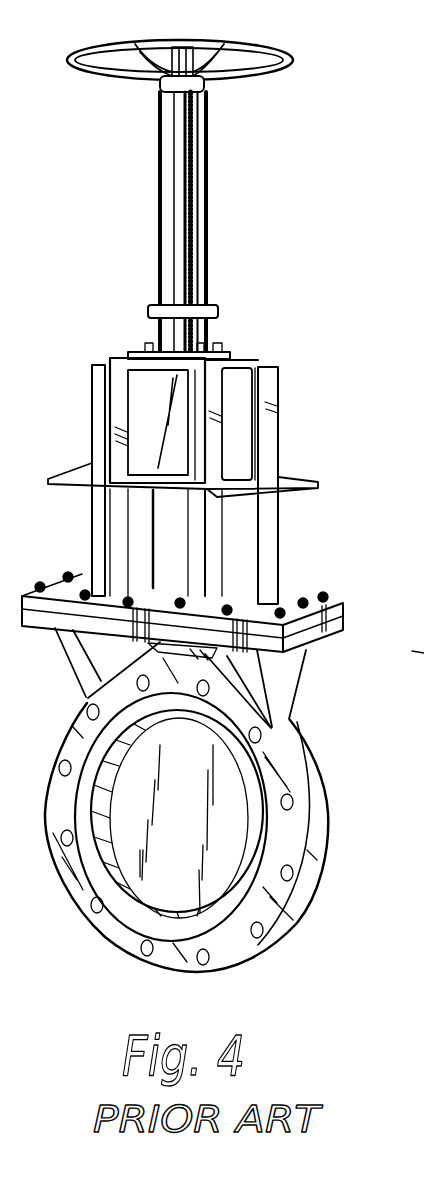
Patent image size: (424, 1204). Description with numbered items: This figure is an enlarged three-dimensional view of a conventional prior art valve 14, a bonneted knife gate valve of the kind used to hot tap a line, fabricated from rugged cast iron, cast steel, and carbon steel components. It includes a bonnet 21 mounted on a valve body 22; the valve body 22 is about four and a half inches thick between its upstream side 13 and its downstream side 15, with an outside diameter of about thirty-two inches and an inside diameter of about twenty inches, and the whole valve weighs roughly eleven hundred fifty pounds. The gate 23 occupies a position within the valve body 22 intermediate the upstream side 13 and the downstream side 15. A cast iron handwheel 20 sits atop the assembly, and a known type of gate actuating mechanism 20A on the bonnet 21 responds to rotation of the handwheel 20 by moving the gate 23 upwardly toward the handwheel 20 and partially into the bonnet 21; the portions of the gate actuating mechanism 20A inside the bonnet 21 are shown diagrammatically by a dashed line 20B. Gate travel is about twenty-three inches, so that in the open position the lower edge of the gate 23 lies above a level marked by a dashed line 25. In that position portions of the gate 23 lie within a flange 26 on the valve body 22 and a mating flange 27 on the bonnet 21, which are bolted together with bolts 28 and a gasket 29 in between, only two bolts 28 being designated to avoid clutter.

The prior art valve 14 is at (316, 182).
The handwheel 20 is at (280, 50).
The gate actuating mechanism 20A is at (200, 211).
The dashed line 20B is at (228, 422).
The bonnet 21 is at (277, 442).
The mating flange 27 is at (55, 590).
The bolts 28 is at (327, 590).
The gasket 29 is at (345, 610).
The flange 26 is at (49, 650).
The dashed line 25 is at (235, 718).
The downstream side 15 is at (330, 845).
The valve body 22 is at (295, 928).
The gate 23 is at (168, 860).
The upstream side 13 is at (160, 957).